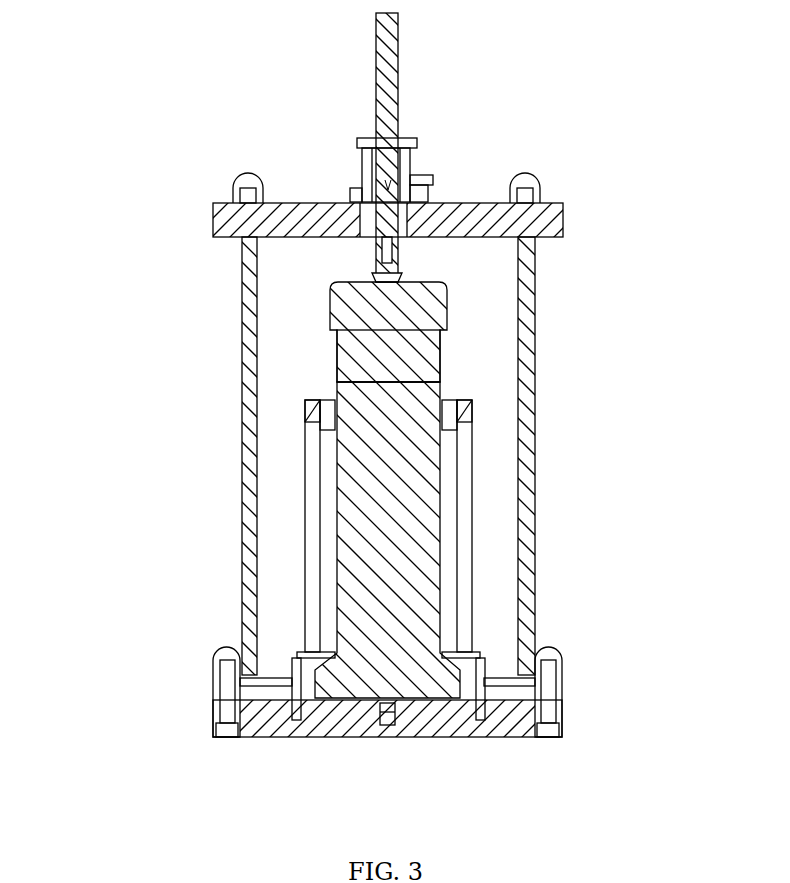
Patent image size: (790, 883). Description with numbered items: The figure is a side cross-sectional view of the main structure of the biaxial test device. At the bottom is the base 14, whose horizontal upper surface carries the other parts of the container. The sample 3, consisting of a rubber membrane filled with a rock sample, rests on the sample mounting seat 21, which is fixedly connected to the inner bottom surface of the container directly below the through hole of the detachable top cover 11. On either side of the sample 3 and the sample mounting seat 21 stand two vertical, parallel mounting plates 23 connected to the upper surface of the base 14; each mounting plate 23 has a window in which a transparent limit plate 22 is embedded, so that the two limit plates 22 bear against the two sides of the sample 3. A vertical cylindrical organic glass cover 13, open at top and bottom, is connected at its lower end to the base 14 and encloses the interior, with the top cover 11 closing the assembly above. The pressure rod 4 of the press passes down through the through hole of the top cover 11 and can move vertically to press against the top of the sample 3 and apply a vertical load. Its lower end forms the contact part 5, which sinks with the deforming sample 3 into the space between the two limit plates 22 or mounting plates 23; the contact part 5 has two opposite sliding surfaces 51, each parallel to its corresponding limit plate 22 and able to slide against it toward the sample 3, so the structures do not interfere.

The sample 3 is at (358, 497).
The pressure rod 4 is at (376, 257).
The contact part 5 is at (358, 310).
The sliding surface 51 is at (337, 356).
The top cover 11 is at (563, 222).
The organic glass cover 13 is at (535, 320).
The base 14 is at (517, 727).
The sample mounting seat 21 is at (463, 661).
The limit plate 22 is at (305, 573).
The mounting plate 23 is at (305, 415).